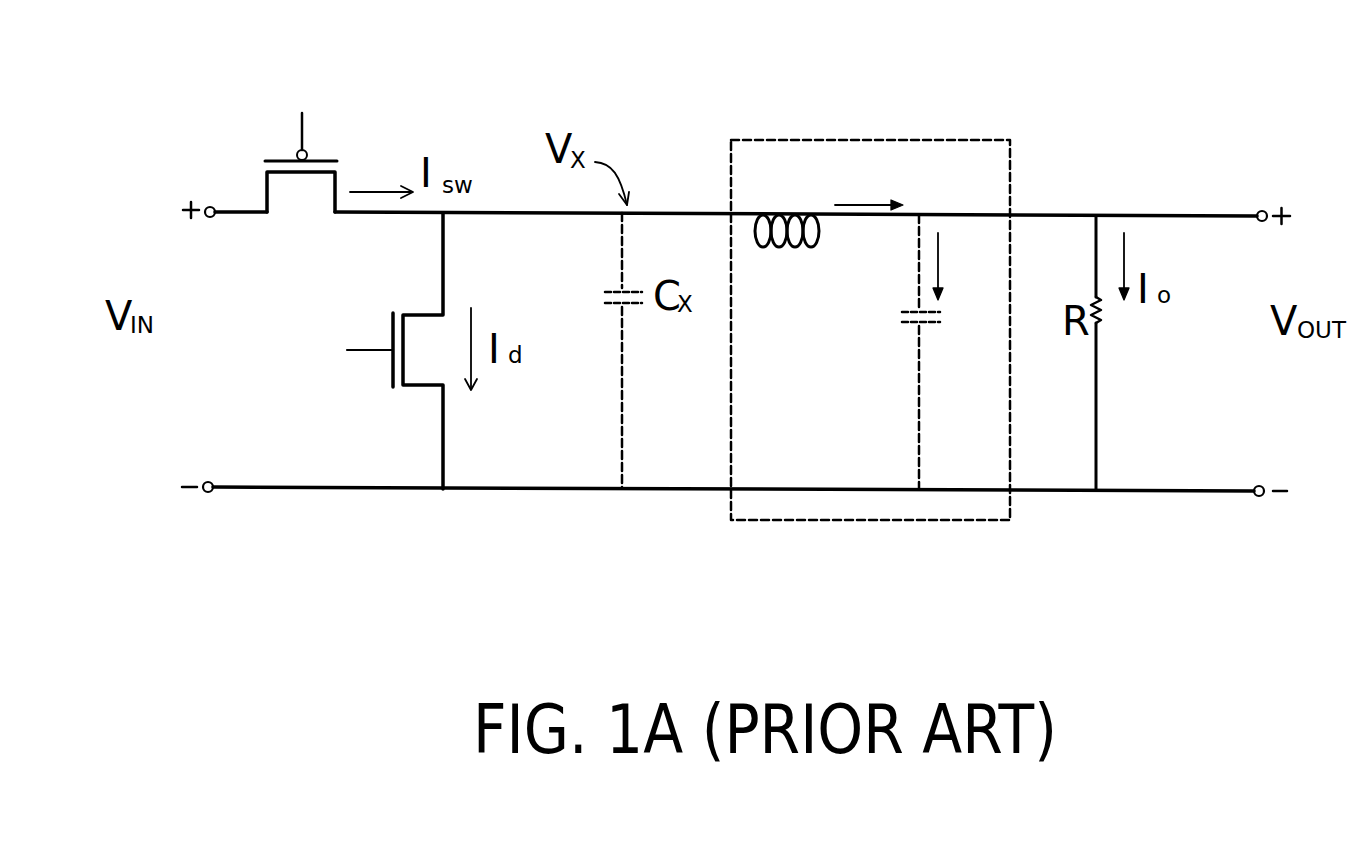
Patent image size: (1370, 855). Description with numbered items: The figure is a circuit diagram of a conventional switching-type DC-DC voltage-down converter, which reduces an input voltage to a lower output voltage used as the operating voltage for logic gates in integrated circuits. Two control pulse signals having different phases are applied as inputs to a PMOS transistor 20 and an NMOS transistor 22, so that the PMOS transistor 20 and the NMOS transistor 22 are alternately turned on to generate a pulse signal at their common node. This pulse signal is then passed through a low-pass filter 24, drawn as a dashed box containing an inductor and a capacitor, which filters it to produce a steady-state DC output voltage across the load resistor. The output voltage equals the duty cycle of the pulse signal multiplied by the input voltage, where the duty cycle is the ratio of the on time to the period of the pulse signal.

The PMOS transistor 20 is at (265, 152).
The NMOS transistor 22 is at (399, 393).
The low-pass filter 24 is at (1011, 175).